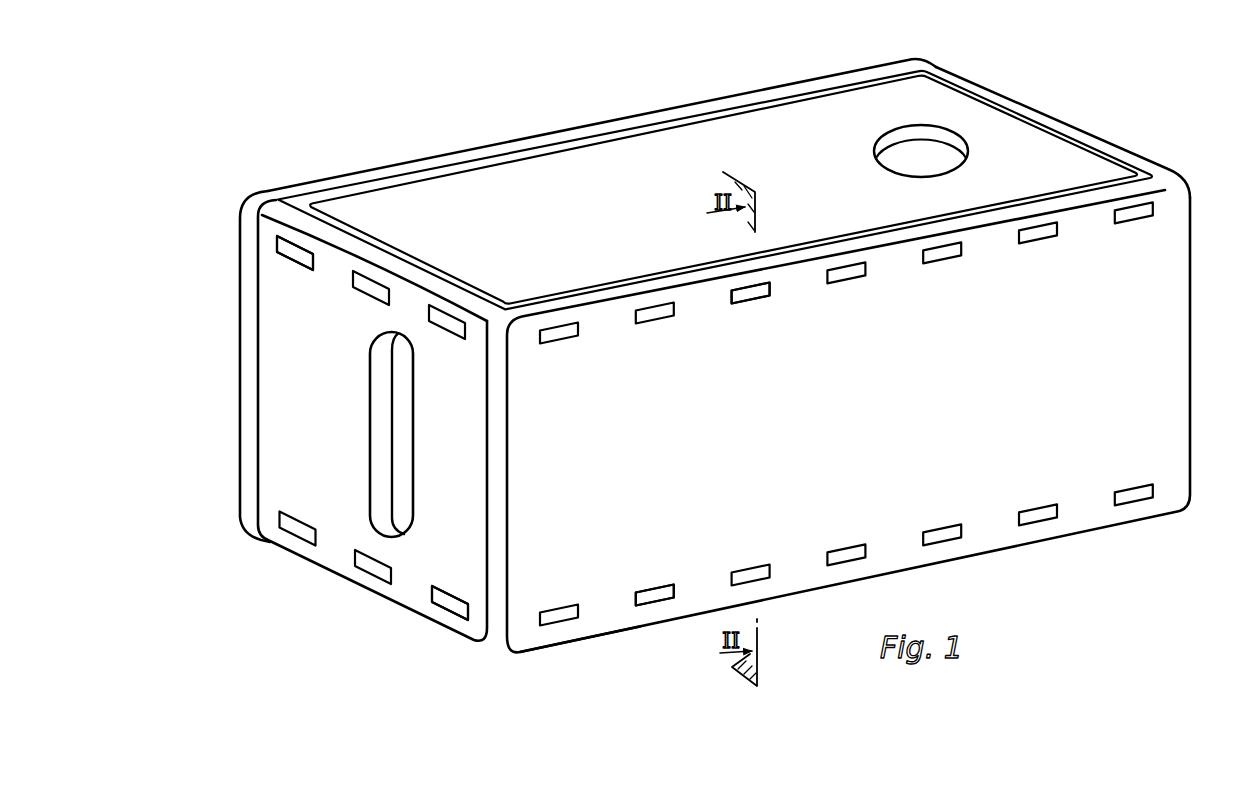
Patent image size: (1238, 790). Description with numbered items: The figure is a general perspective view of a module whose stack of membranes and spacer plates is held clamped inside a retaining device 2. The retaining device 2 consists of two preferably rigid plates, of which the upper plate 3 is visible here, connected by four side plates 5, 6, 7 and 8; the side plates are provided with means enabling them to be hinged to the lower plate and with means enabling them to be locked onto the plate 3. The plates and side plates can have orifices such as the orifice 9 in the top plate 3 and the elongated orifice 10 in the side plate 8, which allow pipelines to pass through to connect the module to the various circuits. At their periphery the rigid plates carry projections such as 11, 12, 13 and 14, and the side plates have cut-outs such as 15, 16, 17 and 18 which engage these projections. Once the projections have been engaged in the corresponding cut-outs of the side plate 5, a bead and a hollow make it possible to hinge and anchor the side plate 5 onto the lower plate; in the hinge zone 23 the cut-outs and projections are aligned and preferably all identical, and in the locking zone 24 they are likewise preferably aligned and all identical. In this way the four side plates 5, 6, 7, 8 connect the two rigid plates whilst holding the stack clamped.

The retaining device 2 is at (570, 200).
The rigid plate 3 is at (388, 205).
The side plate 5 is at (1137, 317).
The side plate 6 is at (1067, 130).
The side plate 7 is at (485, 156).
The side plate 8 is at (295, 373).
The orifice 9 is at (937, 157).
The orifice 10 is at (406, 459).
The projection 11 is at (288, 254).
The projection 12 is at (759, 296).
The projection 13 is at (442, 601).
The projection 14 is at (659, 597).
The cut-out 15 is at (289, 264).
The cut-out 16 is at (727, 309).
The cut-out 17 is at (449, 612).
The cut-out 18 is at (637, 604).
The hinge zone 23 is at (598, 616).
The locking zone 24 is at (893, 262).